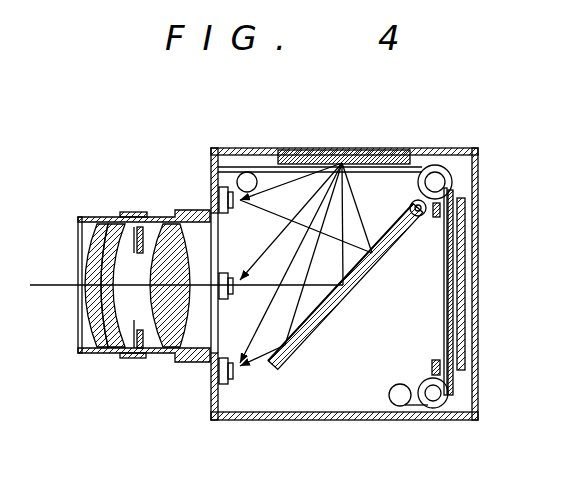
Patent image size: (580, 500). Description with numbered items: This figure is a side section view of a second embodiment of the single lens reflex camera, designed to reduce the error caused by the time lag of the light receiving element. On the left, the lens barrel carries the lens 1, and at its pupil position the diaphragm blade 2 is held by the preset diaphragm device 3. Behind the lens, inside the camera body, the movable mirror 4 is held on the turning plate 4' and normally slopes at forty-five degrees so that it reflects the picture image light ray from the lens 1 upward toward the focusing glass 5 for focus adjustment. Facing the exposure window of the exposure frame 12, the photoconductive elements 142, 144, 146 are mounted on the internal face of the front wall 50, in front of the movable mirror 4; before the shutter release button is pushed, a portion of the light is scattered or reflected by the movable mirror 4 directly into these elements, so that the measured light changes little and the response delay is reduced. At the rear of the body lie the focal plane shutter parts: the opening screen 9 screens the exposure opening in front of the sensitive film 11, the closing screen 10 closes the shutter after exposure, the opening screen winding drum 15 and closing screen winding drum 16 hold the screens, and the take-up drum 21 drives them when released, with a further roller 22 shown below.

The lens 1 is at (106, 222).
The diaphragm blade 2 is at (128, 236).
The preset diaphragm device 3 is at (138, 230).
The movable mirror 4 is at (347, 278).
The turning plate 4' is at (291, 414).
The focusing glass 5 is at (330, 150).
The opening screen 9 is at (450, 318).
The closing screen 10 is at (450, 190).
The sensitive film 11 is at (460, 281).
The exposure frame 12 is at (442, 210).
The opening screen winding drum 15 is at (249, 173).
The closing screen winding drum 16 is at (437, 184).
The take-up drum 21 is at (395, 406).
The lower take-up roller 22 is at (436, 396).
The front wall 50 is at (210, 187).
The photoconductive element 142 is at (216, 305).
The photoconductive element 144 is at (216, 385).
The photoconductive element 146 is at (220, 192).